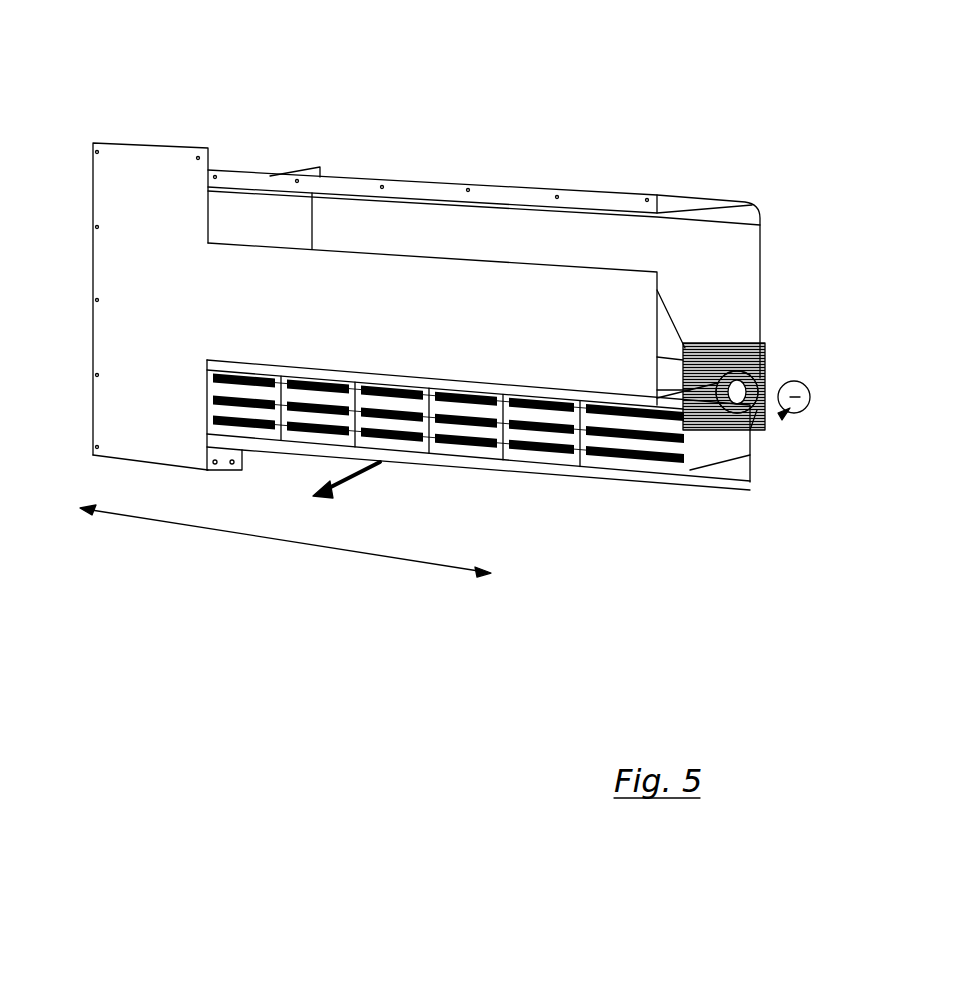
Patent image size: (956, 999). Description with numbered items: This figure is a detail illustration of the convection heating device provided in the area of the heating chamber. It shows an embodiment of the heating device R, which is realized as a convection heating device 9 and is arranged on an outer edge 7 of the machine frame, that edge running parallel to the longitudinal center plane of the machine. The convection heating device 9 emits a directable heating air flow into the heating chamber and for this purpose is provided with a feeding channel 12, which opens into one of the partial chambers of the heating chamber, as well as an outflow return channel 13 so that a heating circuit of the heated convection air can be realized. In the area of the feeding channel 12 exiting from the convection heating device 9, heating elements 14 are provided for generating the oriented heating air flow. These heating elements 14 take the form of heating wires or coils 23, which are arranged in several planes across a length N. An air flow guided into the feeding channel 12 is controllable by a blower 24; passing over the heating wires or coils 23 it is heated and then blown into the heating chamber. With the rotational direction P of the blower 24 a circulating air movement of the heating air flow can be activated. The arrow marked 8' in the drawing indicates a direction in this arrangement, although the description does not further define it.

The outer edge of the machine frame 7 is at (150, 147).
The outflow return channel 13 is at (720, 258).
The convection heating device 9 is at (688, 300).
The rotational direction of the blower P is at (803, 377).
The heating elements 14 is at (620, 458).
The heating wires or coils 23 is at (527, 405).
The direction of movement 8' is at (346, 496).
The blower 24 is at (757, 430).
The feeding channel 12 is at (735, 453).
The heating device R is at (462, 158).
The length N is at (290, 546).